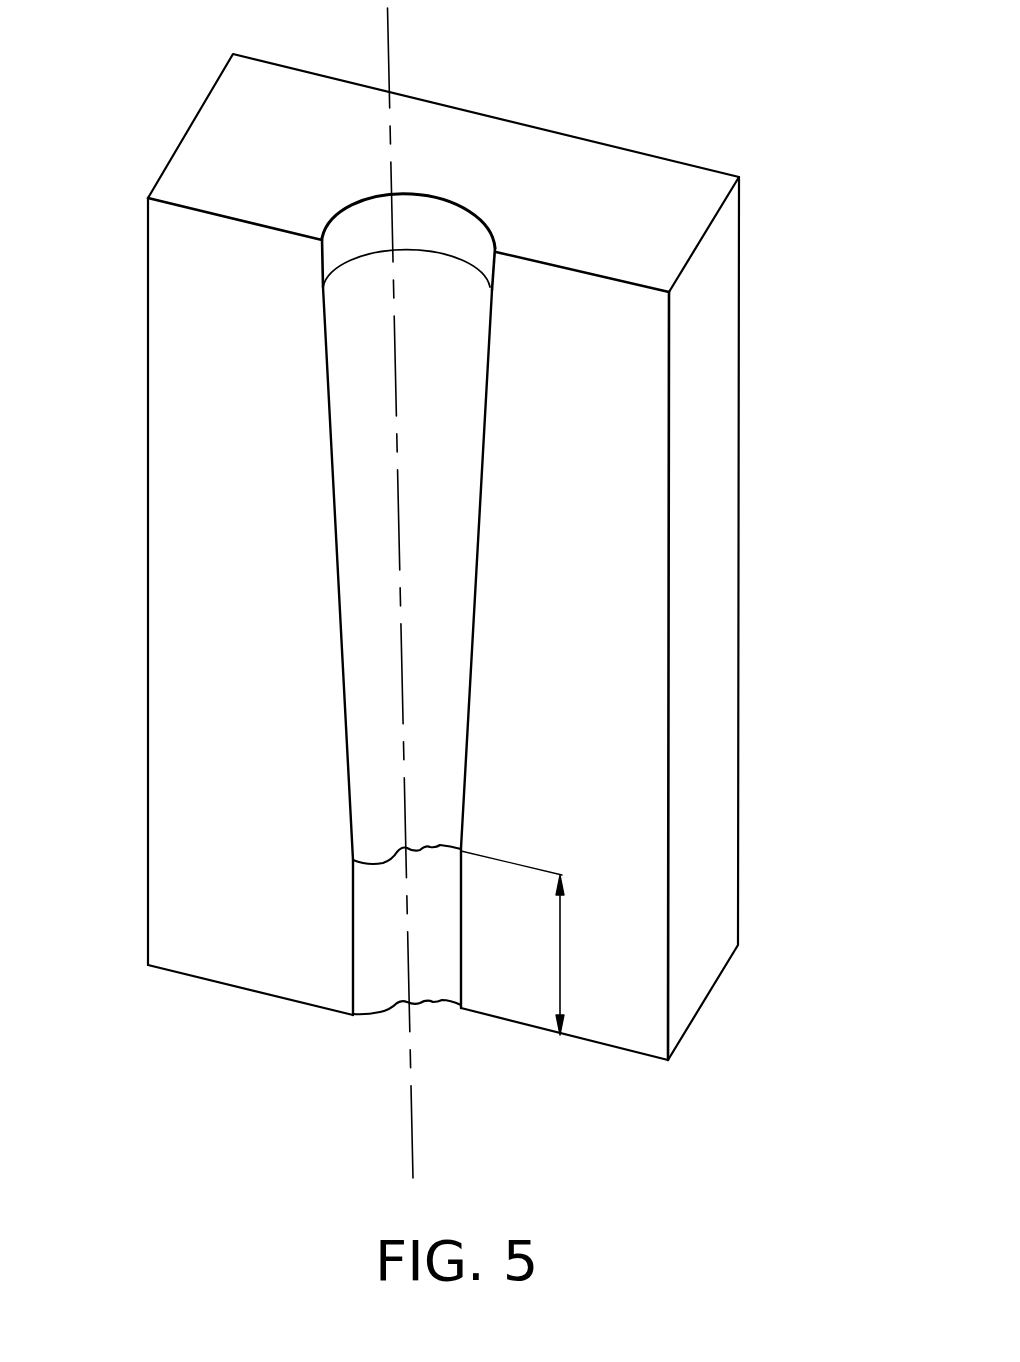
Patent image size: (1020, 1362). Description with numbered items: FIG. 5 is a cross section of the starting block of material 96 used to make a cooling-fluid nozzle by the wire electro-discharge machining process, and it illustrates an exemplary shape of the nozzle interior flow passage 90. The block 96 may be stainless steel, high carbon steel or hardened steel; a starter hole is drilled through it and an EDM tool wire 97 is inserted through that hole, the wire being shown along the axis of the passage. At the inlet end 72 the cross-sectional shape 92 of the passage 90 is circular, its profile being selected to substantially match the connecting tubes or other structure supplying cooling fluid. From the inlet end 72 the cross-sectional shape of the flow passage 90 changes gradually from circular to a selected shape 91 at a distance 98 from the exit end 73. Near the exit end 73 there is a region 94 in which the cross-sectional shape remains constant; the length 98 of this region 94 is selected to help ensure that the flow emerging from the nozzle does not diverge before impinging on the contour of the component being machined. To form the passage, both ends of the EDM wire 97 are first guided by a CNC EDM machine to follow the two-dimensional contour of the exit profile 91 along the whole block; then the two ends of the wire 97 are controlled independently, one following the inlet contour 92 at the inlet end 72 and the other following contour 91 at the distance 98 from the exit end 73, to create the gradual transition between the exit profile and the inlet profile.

The inlet end 72 is at (593, 158).
The exit end 73 is at (494, 1022).
The nozzle interior flow passage 90 is at (478, 525).
The exit profile 91 is at (386, 1018).
The inlet profile 92 is at (463, 257).
The constant cross-section region 94 is at (458, 908).
The block of material 96 is at (148, 615).
The EDM tool wire 97 is at (411, 1143).
The length of constant region 98 is at (560, 960).